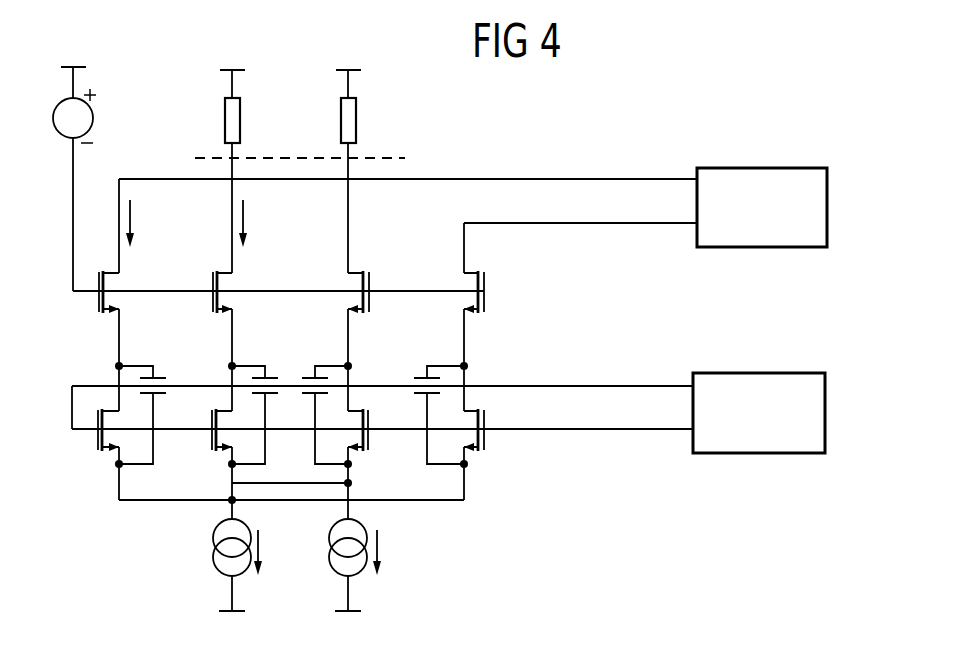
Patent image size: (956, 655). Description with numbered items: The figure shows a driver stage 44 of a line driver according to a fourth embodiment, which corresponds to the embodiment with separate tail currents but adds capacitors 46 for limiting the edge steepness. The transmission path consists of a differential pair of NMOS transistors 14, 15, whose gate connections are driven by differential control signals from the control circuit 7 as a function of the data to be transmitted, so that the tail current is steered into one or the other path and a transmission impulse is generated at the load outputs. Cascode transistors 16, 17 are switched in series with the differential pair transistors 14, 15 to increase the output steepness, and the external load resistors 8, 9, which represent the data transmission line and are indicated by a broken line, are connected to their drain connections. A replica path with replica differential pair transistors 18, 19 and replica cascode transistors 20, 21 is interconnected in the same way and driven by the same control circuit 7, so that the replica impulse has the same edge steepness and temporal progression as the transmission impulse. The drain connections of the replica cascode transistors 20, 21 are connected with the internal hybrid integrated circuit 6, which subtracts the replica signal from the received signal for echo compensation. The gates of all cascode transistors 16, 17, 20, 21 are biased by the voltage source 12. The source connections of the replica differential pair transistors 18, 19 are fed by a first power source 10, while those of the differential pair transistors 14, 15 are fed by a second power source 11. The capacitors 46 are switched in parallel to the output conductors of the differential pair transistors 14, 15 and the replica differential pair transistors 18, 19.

The internal hybrid integrated circuit 6 is at (762, 168).
The control circuit 7 is at (762, 373).
The external load resistor 8 is at (356, 112).
The external load resistor 9 is at (240, 112).
The first power source 10 is at (212, 553).
The second power source 11 is at (340, 577).
The voltage source 12 is at (93, 118).
The differential pair transistor 14 is at (370, 440).
The differential pair transistor 15 is at (210, 440).
The cascode transistor 16 is at (372, 285).
The cascode transistor 17 is at (210, 283).
The replica differential pair transistor 18 is at (486, 443).
The replica differential pair transistor 19 is at (95, 438).
The replica cascode transistor 20 is at (486, 305).
The replica cascode transistor 21 is at (96, 303).
The driver stage 44 is at (530, 505).
The capacitor 46 is at (153, 377).